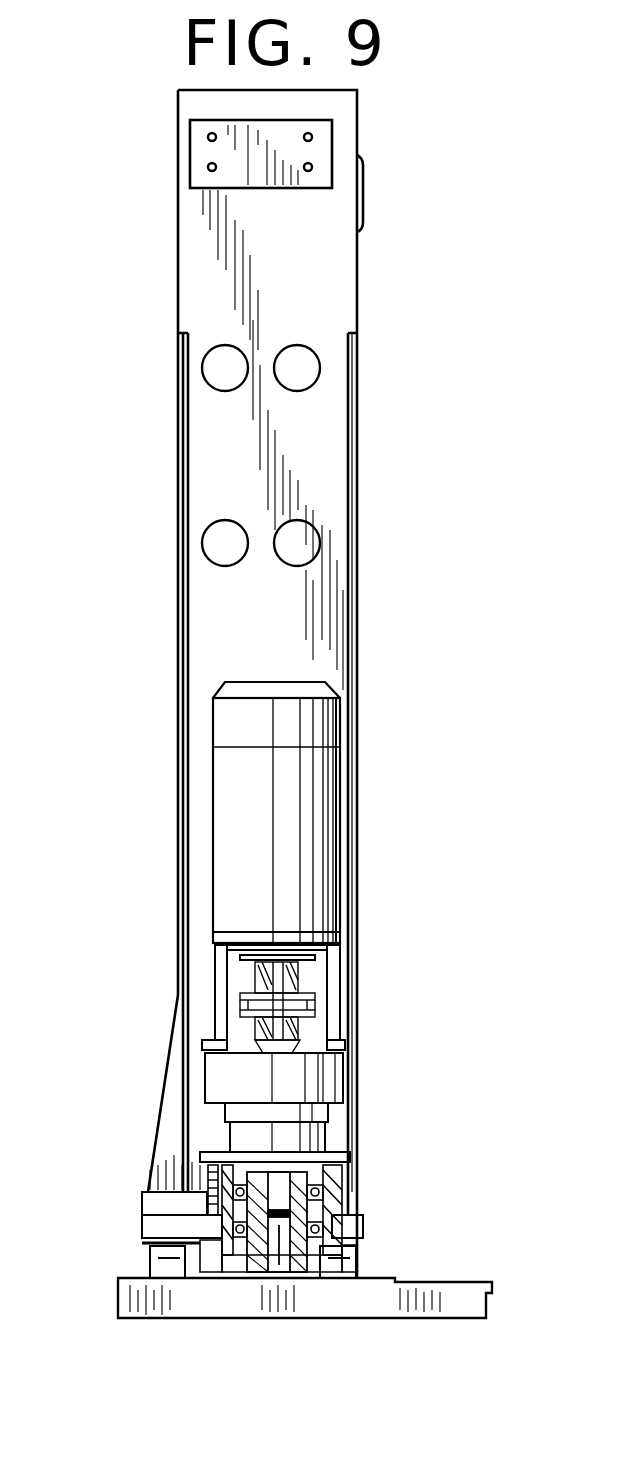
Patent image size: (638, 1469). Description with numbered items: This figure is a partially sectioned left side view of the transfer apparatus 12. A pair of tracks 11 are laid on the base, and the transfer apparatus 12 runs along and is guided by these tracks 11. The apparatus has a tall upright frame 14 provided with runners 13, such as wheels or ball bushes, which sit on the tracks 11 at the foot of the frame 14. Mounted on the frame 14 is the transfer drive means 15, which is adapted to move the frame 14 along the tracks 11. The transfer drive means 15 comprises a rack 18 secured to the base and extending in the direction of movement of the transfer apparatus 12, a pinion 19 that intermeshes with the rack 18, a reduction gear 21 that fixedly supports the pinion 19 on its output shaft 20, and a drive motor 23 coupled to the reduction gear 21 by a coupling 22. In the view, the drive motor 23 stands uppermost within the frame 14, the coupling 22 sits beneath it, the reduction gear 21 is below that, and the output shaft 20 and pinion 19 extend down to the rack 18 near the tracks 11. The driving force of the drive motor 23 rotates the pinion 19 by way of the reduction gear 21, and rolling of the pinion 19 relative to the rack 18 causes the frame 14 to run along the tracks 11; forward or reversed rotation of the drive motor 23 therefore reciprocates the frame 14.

The tracks 11 is at (170, 1278).
The transfer apparatus 12 is at (367, 485).
The runners 13 is at (150, 1255).
The frame 14 is at (362, 747).
The transfer drive means 15 is at (213, 862).
The rack 18 is at (228, 1262).
The pinion 19 is at (300, 1280).
The output shaft 20 is at (340, 1172).
The reduction gear 21 is at (327, 1107).
The coupling 22 is at (307, 992).
The drive motor 23 is at (322, 893).